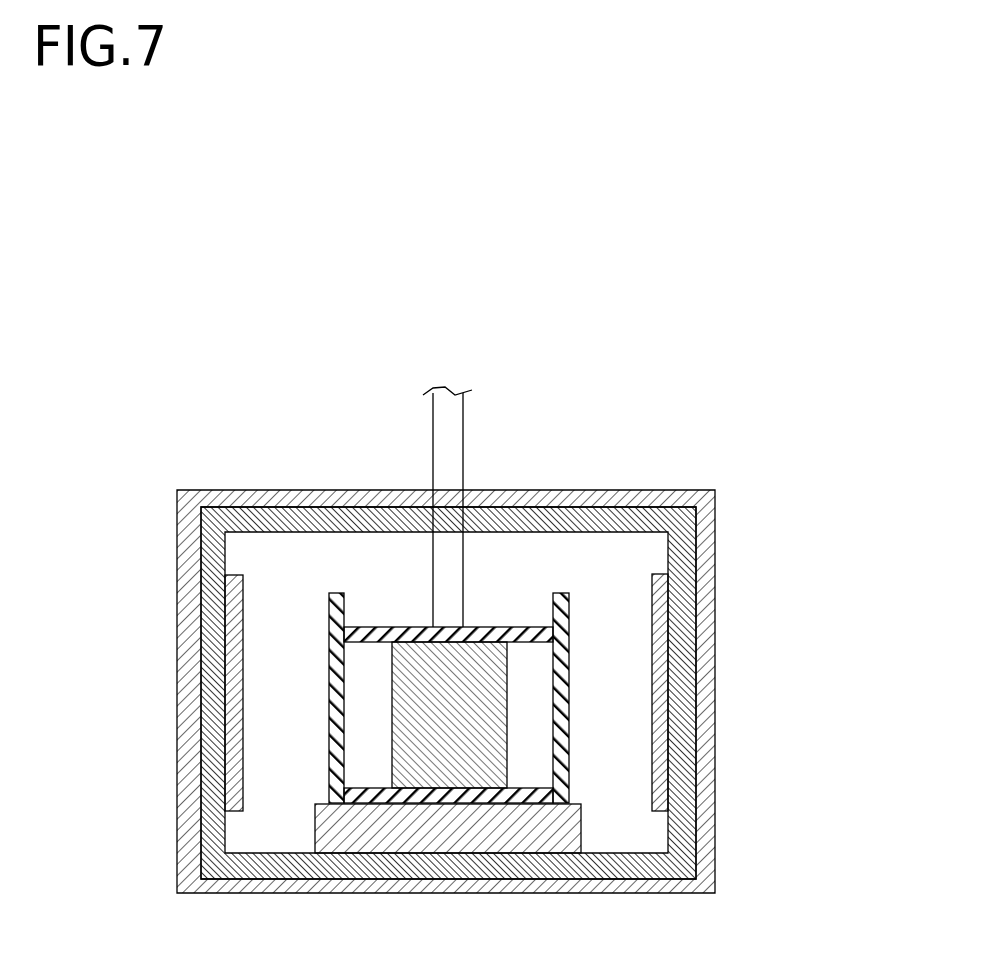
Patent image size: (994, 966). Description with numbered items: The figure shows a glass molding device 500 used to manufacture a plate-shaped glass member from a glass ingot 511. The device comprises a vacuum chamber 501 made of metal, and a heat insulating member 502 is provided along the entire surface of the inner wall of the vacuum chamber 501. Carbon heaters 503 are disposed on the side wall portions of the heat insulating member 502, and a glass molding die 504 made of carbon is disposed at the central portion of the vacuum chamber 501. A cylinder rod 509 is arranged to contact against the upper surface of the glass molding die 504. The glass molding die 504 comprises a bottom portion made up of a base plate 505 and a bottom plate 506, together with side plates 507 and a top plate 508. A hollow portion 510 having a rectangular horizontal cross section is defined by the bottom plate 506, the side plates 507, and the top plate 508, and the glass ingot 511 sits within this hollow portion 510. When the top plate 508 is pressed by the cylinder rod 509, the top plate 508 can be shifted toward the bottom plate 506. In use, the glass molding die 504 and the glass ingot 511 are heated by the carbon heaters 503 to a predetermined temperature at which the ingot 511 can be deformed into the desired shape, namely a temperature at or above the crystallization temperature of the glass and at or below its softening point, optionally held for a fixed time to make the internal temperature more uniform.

The glass molding device 500 is at (456, 666).
The vacuum chamber 501 is at (513, 691).
The heat insulating member 502 is at (379, 693).
The carbon heaters 503 is at (450, 692).
The glass molding die 504 is at (446, 692).
The base plate 505 is at (533, 900).
The bottom plate 506 is at (448, 875).
The side plates 507 is at (443, 698).
The top plate 508 is at (448, 670).
The cylinder rod 509 is at (506, 507).
The hollow portion 510 is at (488, 675).
The glass ingot 511 is at (432, 665).